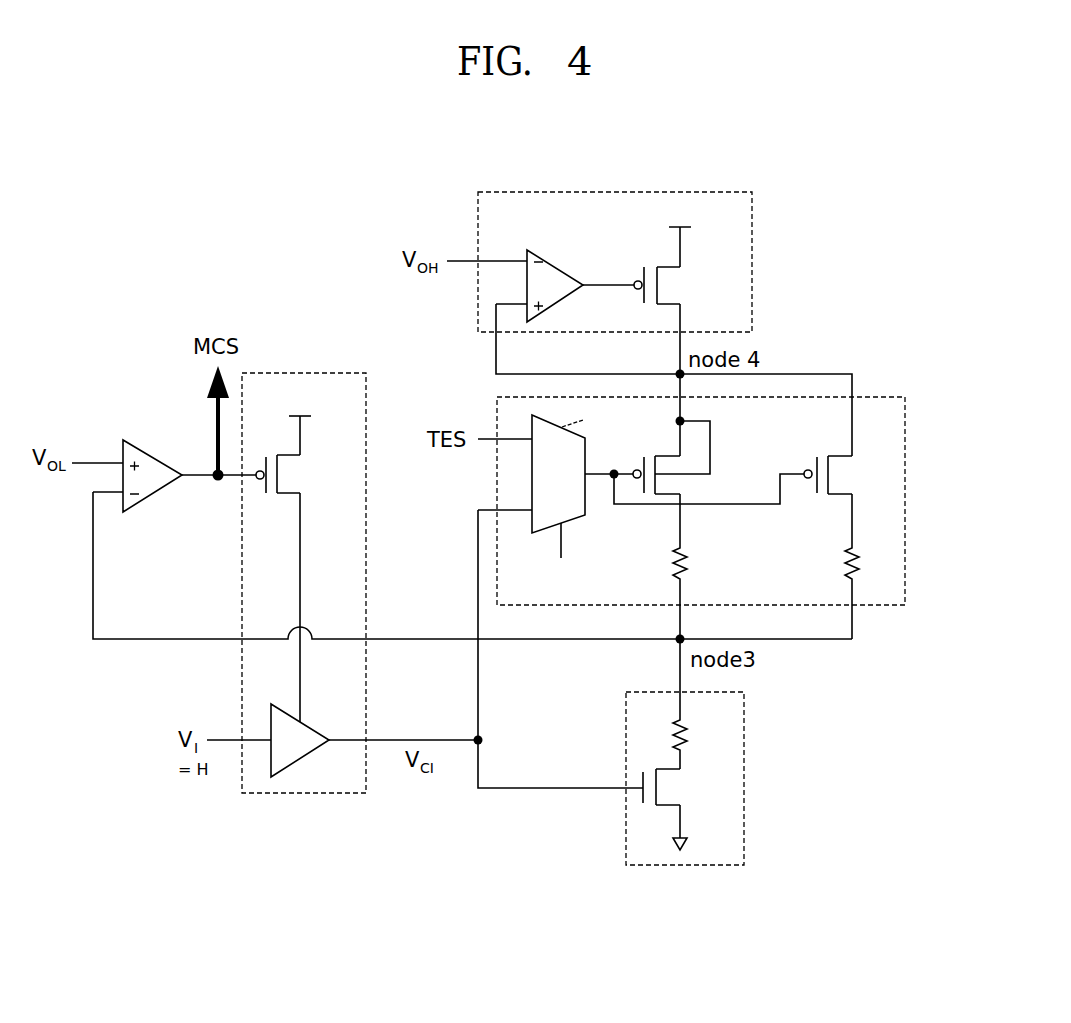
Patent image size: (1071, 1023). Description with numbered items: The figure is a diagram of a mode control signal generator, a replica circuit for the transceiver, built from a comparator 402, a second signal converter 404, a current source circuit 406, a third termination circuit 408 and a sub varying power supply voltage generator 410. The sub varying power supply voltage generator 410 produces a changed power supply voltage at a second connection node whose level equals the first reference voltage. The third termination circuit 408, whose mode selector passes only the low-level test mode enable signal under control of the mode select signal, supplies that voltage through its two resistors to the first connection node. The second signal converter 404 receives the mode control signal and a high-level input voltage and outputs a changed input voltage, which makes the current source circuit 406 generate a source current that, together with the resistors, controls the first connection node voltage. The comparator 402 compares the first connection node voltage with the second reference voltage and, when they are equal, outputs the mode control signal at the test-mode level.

The comparator 402 is at (154, 468).
The second signal converter 404 is at (312, 372).
The current source circuit 406 is at (745, 742).
The third termination circuit 408 is at (875, 398).
The sub varying power supply voltage generator 410 is at (693, 192).